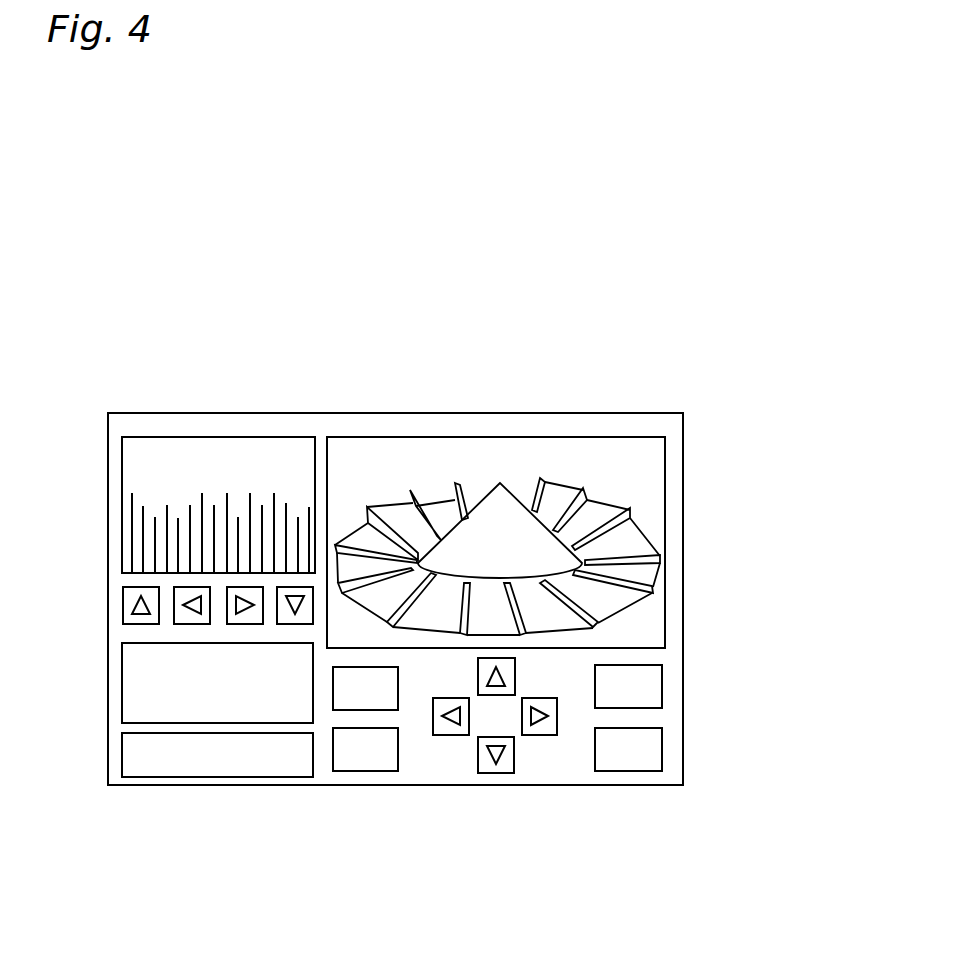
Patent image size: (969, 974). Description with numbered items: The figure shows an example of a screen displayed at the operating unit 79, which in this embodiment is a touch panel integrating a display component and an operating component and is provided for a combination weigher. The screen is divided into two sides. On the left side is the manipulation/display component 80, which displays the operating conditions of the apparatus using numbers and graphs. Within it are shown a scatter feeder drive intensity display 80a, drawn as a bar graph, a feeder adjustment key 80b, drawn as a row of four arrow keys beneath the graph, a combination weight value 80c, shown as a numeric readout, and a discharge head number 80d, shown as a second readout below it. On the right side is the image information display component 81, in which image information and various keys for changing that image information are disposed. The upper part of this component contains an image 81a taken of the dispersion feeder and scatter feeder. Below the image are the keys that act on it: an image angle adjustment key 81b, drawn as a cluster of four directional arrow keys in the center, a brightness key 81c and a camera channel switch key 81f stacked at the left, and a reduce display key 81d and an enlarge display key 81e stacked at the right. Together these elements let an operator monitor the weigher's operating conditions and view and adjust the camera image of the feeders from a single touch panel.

The operating unit 79 is at (442, 318).
The manipulation/display component 80 is at (203, 392).
The scatter feeder drive intensity display 80a is at (138, 462).
The feeder adjustment key 80b is at (120, 600).
The combination weight value 80c is at (138, 688).
The discharge head number 80d is at (143, 765).
The image information display component 81 is at (553, 392).
The image 81a is at (628, 480).
The image angle adjustment key 81b is at (533, 778).
The brightness key 81c is at (398, 690).
The reduce display key 81d is at (662, 687).
The enlarge display key 81e is at (662, 753).
The camera channel switch key 81f is at (377, 771).